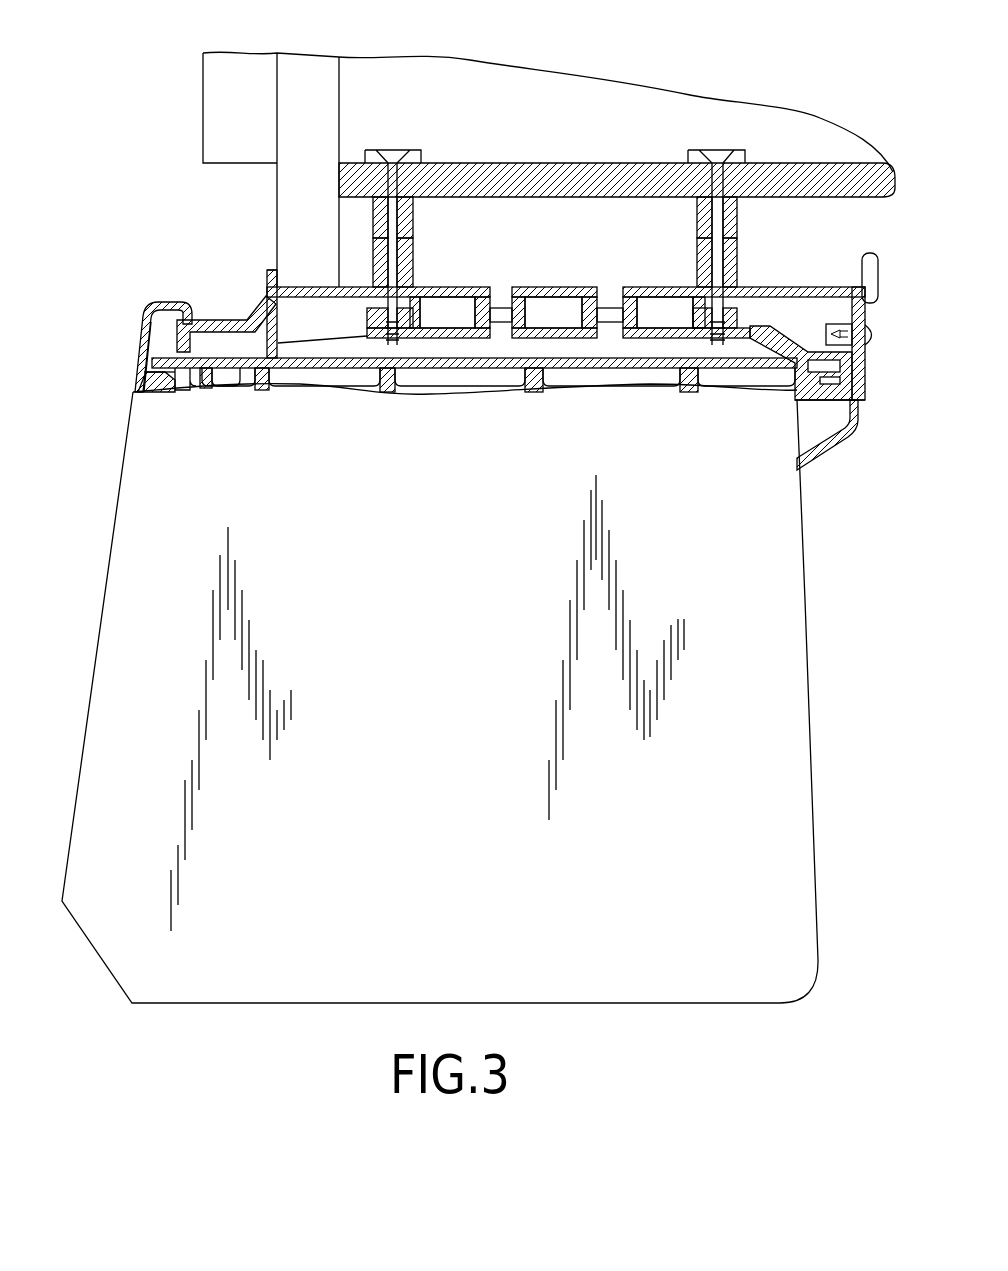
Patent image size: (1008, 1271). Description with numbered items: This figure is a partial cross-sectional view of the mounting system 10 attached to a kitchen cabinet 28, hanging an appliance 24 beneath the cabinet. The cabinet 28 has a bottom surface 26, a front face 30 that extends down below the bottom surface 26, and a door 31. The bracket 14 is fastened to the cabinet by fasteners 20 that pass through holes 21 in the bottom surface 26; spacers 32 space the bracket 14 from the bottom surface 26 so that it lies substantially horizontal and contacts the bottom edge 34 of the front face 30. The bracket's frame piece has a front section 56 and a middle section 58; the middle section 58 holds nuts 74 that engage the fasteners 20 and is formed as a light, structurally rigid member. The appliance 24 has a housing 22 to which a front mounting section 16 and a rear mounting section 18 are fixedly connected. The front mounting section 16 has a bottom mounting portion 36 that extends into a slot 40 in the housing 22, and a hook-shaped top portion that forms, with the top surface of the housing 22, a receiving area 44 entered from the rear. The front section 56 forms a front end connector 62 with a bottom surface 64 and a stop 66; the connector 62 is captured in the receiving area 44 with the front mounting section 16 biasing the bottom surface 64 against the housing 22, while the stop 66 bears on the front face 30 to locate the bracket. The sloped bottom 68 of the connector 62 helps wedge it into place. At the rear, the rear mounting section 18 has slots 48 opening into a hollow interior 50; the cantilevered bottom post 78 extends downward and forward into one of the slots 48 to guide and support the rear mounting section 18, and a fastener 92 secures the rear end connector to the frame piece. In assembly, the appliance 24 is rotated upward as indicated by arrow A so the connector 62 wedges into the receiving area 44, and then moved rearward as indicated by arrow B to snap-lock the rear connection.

The mounting system 10 is at (166, 271).
The bracket 14 is at (555, 375).
The front mounting section 16 is at (150, 318).
The rear mounting section 18 is at (860, 428).
The fastener 20 is at (393, 150).
The hole 21 is at (420, 176).
The housing 22 is at (342, 370).
The appliance 24 is at (494, 769).
The bottom surface 26 is at (558, 163).
The kitchen cabinet 28 is at (600, 95).
The front face 30 is at (312, 57).
The door 31 is at (210, 112).
The spacer 32 is at (416, 248).
The bottom edge 34 is at (305, 286).
The bottom mounting portion 36 is at (160, 395).
The slot 40 is at (133, 396).
The receiving area 44 is at (148, 340).
The slot 48 is at (858, 403).
The hollow interior 50 is at (800, 432).
The front section 56 is at (208, 318).
The middle section 58 is at (560, 291).
The front end connector 62 is at (230, 372).
The bottom surface 64 is at (272, 372).
The stop 66 is at (265, 275).
The bottom 68 is at (145, 375).
The nut 74 is at (396, 346).
The bottom post 78 is at (835, 446).
The fastener 92 is at (878, 336).
The arrow A is at (140, 627).
The arrow B is at (498, 696).